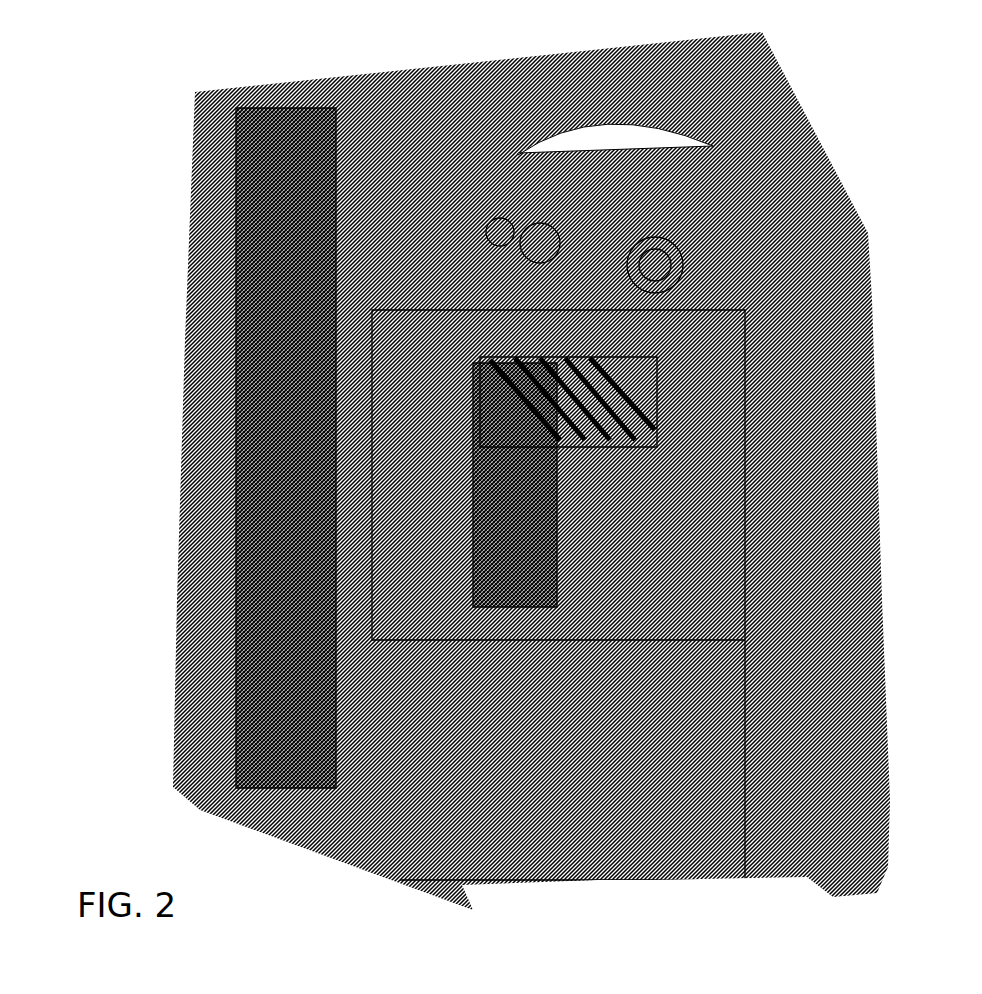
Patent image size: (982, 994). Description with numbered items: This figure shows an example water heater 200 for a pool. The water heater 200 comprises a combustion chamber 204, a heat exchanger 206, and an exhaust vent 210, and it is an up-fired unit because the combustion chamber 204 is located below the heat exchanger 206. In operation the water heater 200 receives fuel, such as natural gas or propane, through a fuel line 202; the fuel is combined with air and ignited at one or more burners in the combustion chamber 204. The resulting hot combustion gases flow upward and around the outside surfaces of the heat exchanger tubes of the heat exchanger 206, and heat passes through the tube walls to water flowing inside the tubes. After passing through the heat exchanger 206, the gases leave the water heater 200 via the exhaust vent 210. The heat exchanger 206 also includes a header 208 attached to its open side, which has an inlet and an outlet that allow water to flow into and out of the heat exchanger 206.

The water heater 200 is at (93, 112).
The fuel line 202 is at (237, 613).
The combustion chamber 204 is at (612, 612).
The heat exchanger 206 is at (650, 410).
The header 208 is at (662, 299).
The exhaust vent 210 is at (660, 138).